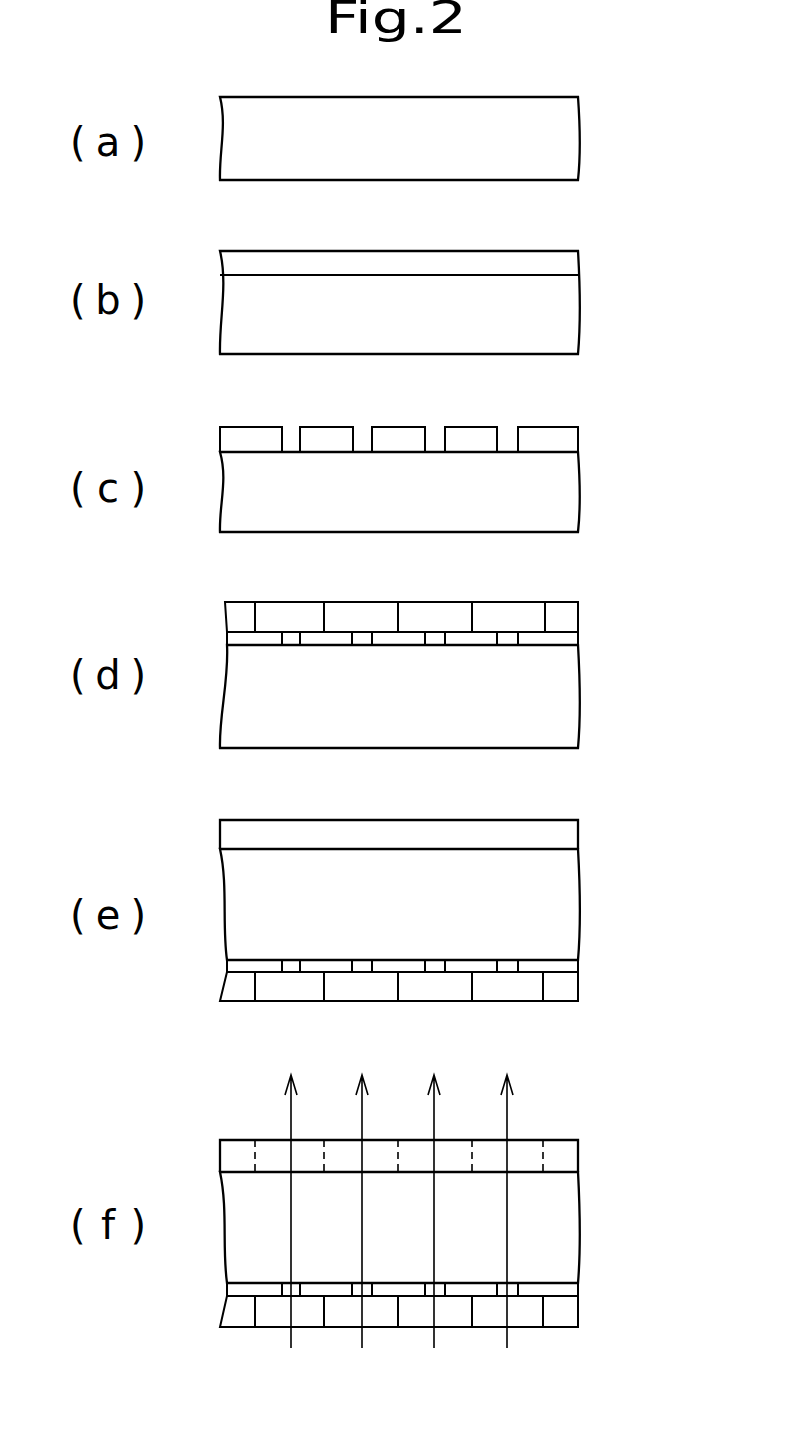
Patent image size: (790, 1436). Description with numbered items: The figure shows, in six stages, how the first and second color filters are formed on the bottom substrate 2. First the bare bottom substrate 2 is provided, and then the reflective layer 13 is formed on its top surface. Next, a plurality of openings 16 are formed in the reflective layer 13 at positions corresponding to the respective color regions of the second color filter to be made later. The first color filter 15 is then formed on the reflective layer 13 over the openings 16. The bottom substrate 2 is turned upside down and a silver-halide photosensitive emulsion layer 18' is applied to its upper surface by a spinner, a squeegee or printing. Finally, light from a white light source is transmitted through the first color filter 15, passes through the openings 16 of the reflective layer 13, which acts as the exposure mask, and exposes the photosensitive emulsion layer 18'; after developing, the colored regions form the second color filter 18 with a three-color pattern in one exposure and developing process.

The bottom substrate 2 is at (572, 139).
The reflective layer 13 is at (572, 263).
The openings 16 is at (510, 440).
The first color filter 15 is at (572, 612).
The photosensitive emulsion layer 18' is at (456, 826).
The second color filter 18 is at (452, 1153).